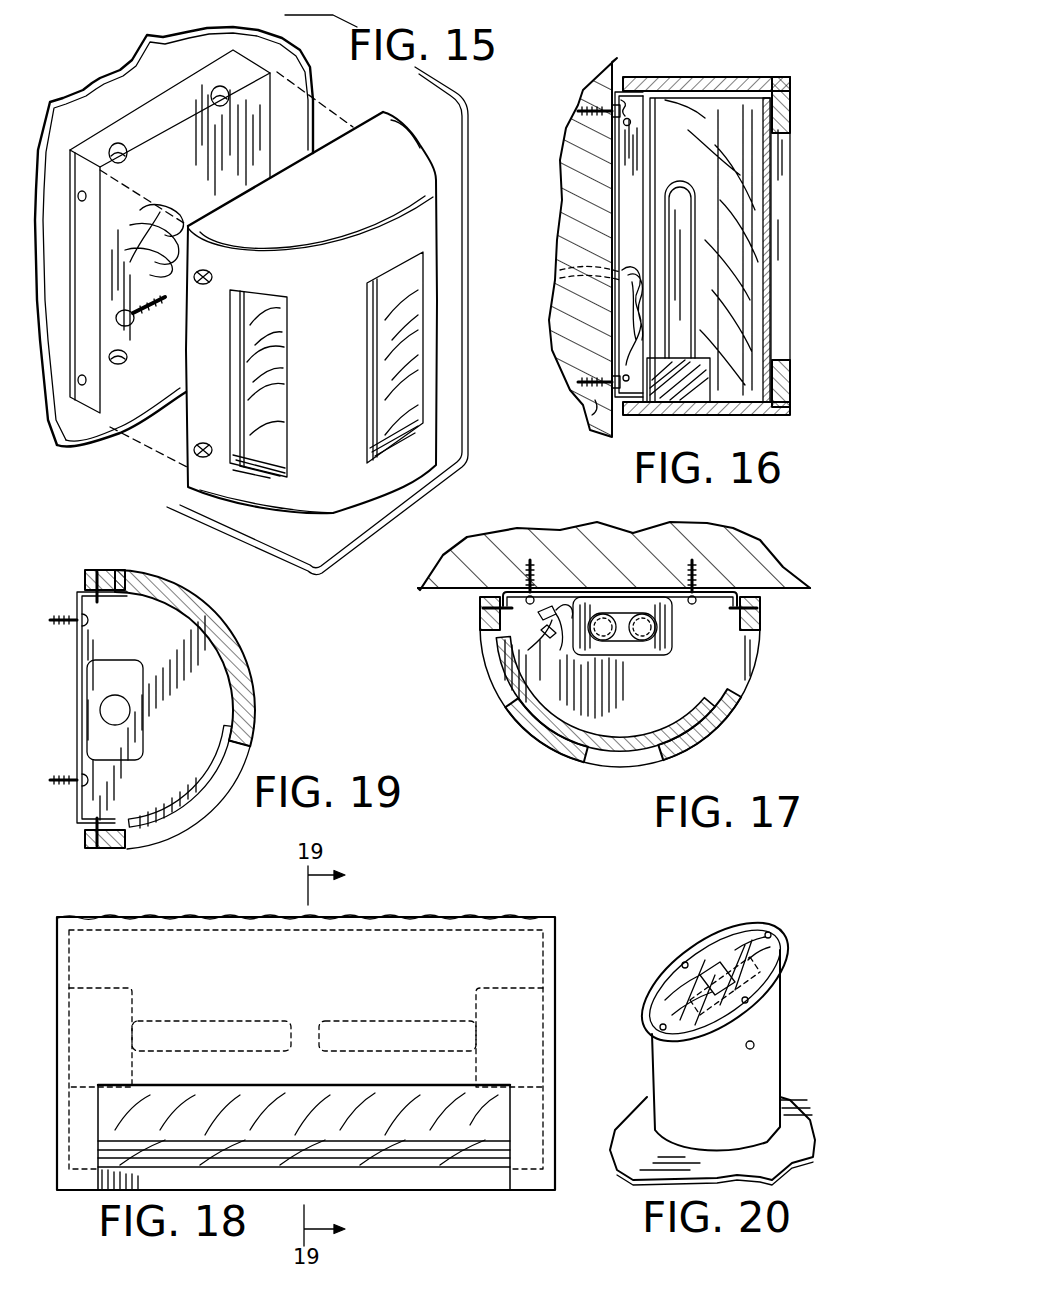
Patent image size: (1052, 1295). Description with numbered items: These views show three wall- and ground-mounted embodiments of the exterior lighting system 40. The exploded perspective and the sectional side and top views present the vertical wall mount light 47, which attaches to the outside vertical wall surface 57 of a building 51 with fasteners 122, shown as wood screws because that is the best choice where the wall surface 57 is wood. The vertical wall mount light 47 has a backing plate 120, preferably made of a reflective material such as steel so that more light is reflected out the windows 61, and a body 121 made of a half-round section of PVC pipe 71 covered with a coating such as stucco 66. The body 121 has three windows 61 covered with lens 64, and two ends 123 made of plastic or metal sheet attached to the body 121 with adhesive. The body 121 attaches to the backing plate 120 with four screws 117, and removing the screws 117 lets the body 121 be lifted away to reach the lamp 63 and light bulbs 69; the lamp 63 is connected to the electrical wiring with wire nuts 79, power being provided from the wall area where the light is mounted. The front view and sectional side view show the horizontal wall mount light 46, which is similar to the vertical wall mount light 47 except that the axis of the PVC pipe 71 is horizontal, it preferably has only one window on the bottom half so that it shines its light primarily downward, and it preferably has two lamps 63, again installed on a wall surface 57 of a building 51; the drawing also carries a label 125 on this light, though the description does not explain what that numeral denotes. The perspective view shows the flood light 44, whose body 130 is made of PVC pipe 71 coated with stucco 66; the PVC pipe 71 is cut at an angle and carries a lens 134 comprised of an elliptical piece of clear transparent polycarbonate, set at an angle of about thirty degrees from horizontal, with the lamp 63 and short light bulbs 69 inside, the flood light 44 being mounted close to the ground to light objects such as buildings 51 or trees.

In FIG. 15, the exterior lighting system 40 is at (353, 316).
In FIG. 16, the exterior lighting system 40 is at (563, 138).
In FIG. 19, the exterior lighting system 40 is at (220, 707).
In FIG. 17, the exterior lighting system 40 is at (447, 601).
In FIG. 18, the exterior lighting system 40 is at (342, 1033).
In FIG. 20, the exterior lighting system 40 is at (704, 1022).
In FIG. 20, the flood light 44 is at (642, 995).
In FIG. 19, the horizontal wall mount light 46 is at (272, 665).
In FIG. 18, the horizontal wall mount light 46 is at (422, 888).
In FIG. 17, the vertical wall mount light 47 is at (420, 655).
In FIG. 15, the building 51 is at (104, 443).
In FIG. 16, the building 51 is at (598, 440).
In FIG. 17, the building 51 is at (583, 528).
In FIG. 15, the wall surface 57 is at (70, 448).
In FIG. 16, the wall surface 57 is at (620, 66).
In FIG. 17, the wall surface 57 is at (452, 590).
In FIG. 15, the windows 61 is at (400, 435).
In FIG. 19, the windows 61 is at (196, 810).
In FIG. 17, the windows 61 is at (490, 678).
In FIG. 18, the windows 61 is at (440, 1190).
In FIG. 16, the lamp 63 is at (698, 392).
In FIG. 19, the lamp 63 is at (107, 660).
In FIG. 17, the lamp 63 is at (661, 657).
In FIG. 15, the lens 64 is at (388, 362).
In FIG. 16, the lens 64 is at (723, 250).
In FIG. 19, the lens 64 is at (207, 795).
In FIG. 17, the lens 64 is at (745, 651).
In FIG. 18, the lens 64 is at (310, 1128).
In FIG. 15, the stucco 66 is at (408, 140).
In FIG. 19, the stucco 66 is at (192, 592).
In FIG. 17, the stucco 66 is at (578, 742).
In FIG. 18, the stucco 66 is at (445, 915).
In FIG. 16, the light bulbs 69 is at (686, 186).
In FIG. 19, the light bulbs 69 is at (131, 711).
In FIG. 17, the light bulbs 69 is at (657, 633).
In FIG. 16, the PVC pipe 71 is at (790, 403).
In FIG. 19, the PVC pipe 71 is at (234, 628).
In FIG. 17, the PVC pipe 71 is at (541, 737).
In FIG. 17, the wire nuts 79 is at (545, 632).
In FIG. 15, the screws 117 is at (133, 323).
In FIG. 19, the screws 117 is at (96, 568).
In FIG. 17, the screws 117 is at (483, 628).
In FIG. 15, the backing plate 120 is at (195, 147).
In FIG. 16, the backing plate 120 is at (692, 247).
In FIG. 19, the backing plate 120 is at (77, 648).
In FIG. 17, the backing plate 120 is at (620, 599).
In FIG. 15, the body 121 is at (276, 512).
In FIG. 17, the body 121 is at (700, 738).
In FIG. 15, the fasteners 122 is at (122, 161).
In FIG. 16, the fasteners 122 is at (606, 76).
In FIG. 19, the fasteners 122 is at (60, 615).
In FIG. 17, the fasteners 122 is at (530, 558).
In FIG. 15, the ends 123 is at (336, 146).
In FIG. 16, the ends 123 is at (700, 77).
In FIG. 18, the ends 123 is at (57, 920).
In FIG. 19, the housing top 125 is at (265, 710).
In FIG. 18, the housing top 125 is at (190, 905).
In FIG. 20, the body 130 is at (787, 1021).
In FIG. 20, the lens 134 is at (745, 935).